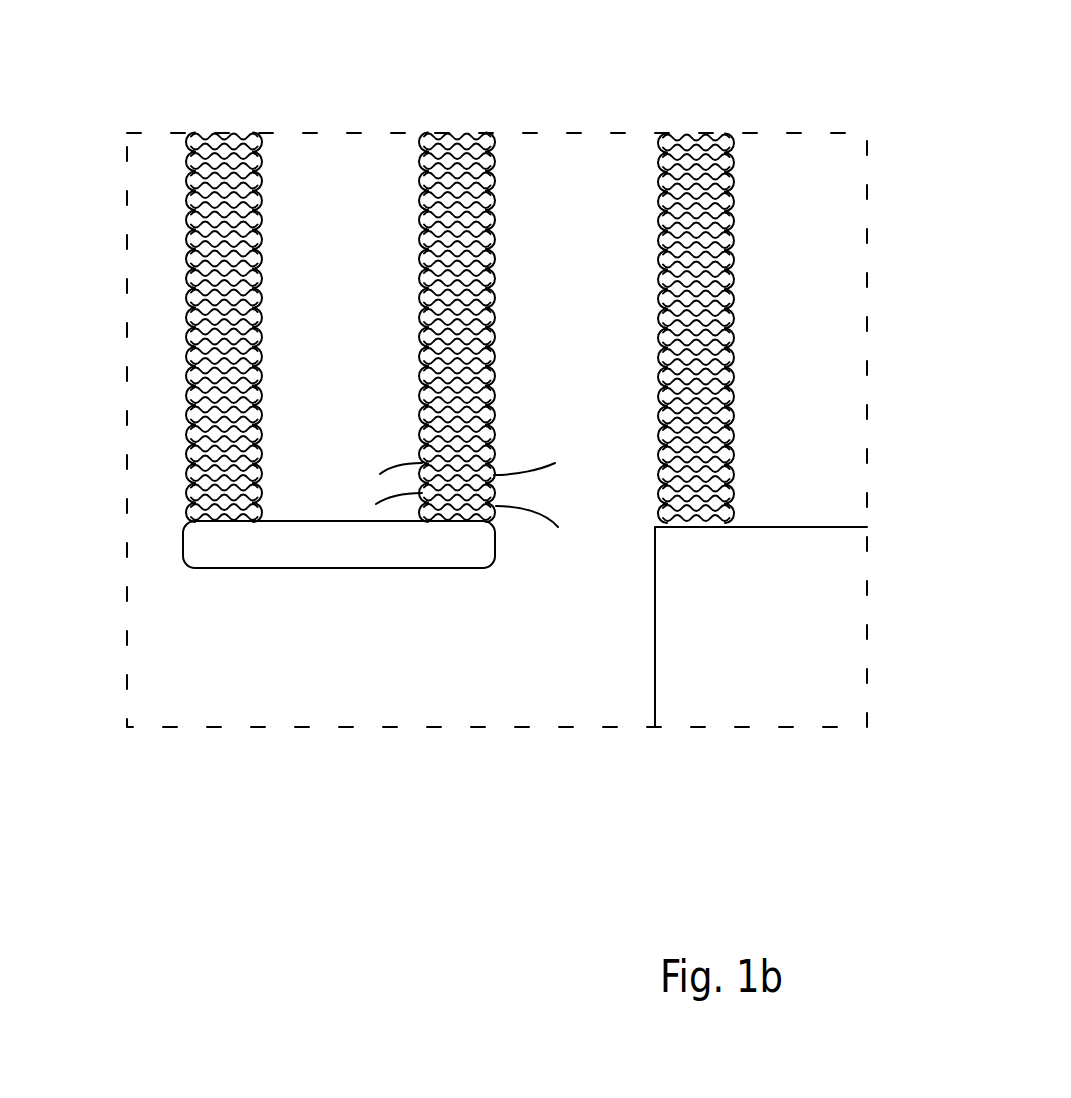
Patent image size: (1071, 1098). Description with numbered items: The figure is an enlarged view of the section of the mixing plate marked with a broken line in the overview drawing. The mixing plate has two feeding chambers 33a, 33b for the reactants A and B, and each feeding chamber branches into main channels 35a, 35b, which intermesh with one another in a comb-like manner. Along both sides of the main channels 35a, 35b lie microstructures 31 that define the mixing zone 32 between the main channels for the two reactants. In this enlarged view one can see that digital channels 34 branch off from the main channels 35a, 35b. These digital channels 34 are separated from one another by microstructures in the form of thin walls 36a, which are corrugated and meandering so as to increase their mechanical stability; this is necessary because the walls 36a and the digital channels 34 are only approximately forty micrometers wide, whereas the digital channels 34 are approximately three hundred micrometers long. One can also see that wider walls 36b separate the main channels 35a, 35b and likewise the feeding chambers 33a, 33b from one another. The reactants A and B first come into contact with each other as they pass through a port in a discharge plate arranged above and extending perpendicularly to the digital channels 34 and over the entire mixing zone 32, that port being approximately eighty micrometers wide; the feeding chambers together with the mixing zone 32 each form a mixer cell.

The microstructures 31 is at (476, 112).
The mixing zone 32 is at (173, 525).
The feeding chamber 33a is at (243, 677).
The feeding chamber 33b is at (822, 185).
The digital channels 34 is at (416, 431).
The main channel 35a is at (590, 183).
The main channel 35b is at (320, 208).
The thin walls 36a is at (662, 533).
The wider walls 36b is at (327, 553).